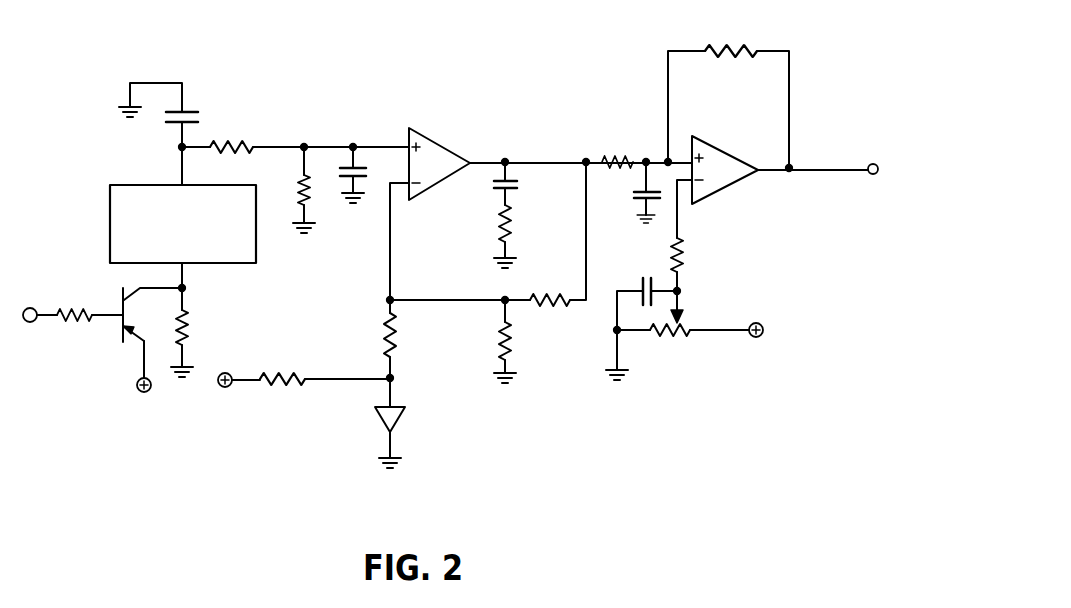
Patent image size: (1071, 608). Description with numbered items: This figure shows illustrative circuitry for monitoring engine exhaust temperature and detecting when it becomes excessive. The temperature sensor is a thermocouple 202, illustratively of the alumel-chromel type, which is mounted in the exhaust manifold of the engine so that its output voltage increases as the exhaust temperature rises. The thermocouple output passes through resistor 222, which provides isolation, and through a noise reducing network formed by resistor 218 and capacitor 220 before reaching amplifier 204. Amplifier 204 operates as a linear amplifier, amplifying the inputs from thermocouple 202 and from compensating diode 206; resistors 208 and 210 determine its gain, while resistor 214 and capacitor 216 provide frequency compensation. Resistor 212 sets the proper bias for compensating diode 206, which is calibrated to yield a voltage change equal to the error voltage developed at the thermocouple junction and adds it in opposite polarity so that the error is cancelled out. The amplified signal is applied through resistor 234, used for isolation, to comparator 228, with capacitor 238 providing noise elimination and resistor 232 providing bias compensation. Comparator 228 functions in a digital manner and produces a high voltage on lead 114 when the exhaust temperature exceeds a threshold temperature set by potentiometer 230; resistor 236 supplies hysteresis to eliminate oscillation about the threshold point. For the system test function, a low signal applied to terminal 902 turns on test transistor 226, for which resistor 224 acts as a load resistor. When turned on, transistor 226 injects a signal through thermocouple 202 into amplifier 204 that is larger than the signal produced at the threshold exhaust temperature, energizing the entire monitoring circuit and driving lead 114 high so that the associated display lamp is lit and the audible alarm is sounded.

The lead 114 is at (808, 166).
The thermocouple 202 is at (110, 210).
The amplifier 204 is at (437, 140).
The compensating diode 206 is at (405, 418).
The resistor 208 is at (512, 342).
The resistor 210 is at (563, 273).
The resistor 212 is at (263, 372).
The resistor 214 is at (512, 229).
The capacitor 216 is at (517, 191).
The resistor 218 is at (297, 190).
The capacitor 220 is at (355, 165).
The resistor 222 is at (243, 142).
The load resistor 224 is at (190, 326).
The test transistor 226 is at (127, 341).
The comparator 228 is at (700, 142).
The potentiometer 230 is at (655, 336).
The resistor 232 is at (684, 264).
The resistor 234 is at (634, 124).
The resistor 236 is at (722, 48).
The capacitor 238 is at (640, 197).
The terminal 902 is at (33, 307).